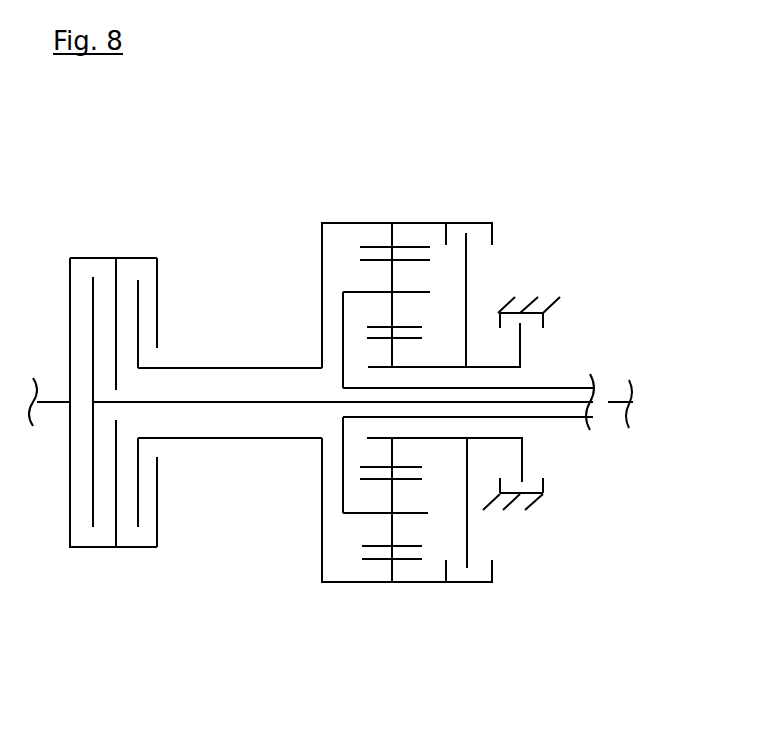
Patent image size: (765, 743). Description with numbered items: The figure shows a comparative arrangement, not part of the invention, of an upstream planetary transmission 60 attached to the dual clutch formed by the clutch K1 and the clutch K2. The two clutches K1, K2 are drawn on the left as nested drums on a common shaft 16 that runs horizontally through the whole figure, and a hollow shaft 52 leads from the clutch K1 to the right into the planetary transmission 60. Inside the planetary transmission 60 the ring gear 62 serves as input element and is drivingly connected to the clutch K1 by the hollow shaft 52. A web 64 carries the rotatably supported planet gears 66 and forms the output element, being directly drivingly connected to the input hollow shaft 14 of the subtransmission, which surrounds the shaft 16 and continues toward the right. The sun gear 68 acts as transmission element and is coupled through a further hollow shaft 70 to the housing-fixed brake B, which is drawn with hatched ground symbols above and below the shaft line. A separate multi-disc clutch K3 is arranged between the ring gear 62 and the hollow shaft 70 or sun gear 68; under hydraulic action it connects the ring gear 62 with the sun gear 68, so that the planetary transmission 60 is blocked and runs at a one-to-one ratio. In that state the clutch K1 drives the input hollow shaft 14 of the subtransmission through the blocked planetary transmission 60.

The input hollow shaft 14 is at (568, 420).
The shaft 16 is at (608, 402).
The hollow shaft 52 is at (230, 367).
The planetary transmission 60 is at (464, 194).
The ring gear 62 is at (322, 558).
The web 64 is at (342, 488).
The planet gears 66 is at (392, 280).
The sun gear 68 is at (408, 465).
The further hollow shaft 70 is at (468, 367).
The brake B is at (545, 290).
The clutch K1 is at (143, 259).
The clutch K2 is at (92, 264).
The separate multi-disc clutch K3 is at (493, 585).